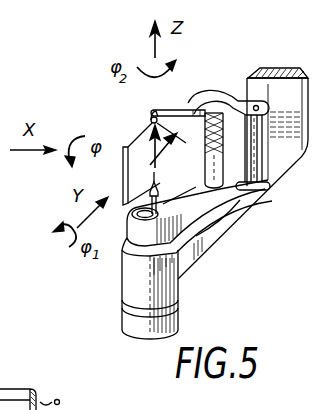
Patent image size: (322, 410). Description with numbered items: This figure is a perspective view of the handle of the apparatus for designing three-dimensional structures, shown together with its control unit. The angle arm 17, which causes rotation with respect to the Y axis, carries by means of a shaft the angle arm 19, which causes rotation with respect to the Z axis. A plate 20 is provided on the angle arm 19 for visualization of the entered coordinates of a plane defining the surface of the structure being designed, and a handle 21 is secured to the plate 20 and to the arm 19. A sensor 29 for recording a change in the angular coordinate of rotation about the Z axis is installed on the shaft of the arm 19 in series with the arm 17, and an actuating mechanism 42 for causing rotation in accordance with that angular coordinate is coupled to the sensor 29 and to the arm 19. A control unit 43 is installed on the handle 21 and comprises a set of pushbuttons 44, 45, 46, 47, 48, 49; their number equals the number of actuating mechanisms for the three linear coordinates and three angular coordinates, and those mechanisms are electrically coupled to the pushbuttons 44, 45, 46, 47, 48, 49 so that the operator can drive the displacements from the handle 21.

The angle arm 17 is at (215, 243).
The angle arm 19 is at (133, 231).
The plate 20 is at (125, 177).
The handle 21 is at (240, 96).
The sensor 29 is at (128, 298).
The actuating mechanism 42 is at (178, 313).
The control unit 43 is at (252, 191).
The pushbutton 44 is at (208, 97).
The pushbutton 45 is at (192, 112).
The pushbutton 46 is at (182, 107).
The pushbutton 47 is at (151, 120).
The pushbutton 48 is at (201, 152).
The pushbutton 49 is at (232, 212).